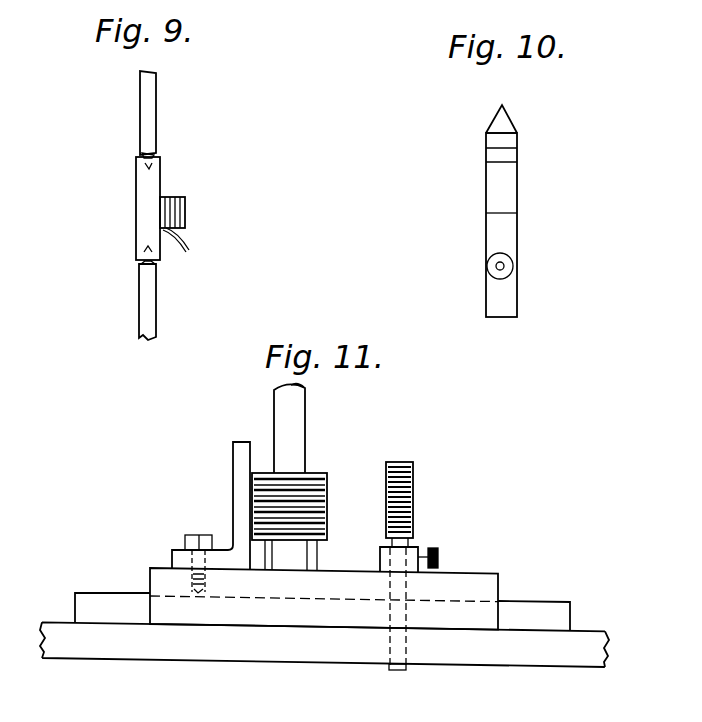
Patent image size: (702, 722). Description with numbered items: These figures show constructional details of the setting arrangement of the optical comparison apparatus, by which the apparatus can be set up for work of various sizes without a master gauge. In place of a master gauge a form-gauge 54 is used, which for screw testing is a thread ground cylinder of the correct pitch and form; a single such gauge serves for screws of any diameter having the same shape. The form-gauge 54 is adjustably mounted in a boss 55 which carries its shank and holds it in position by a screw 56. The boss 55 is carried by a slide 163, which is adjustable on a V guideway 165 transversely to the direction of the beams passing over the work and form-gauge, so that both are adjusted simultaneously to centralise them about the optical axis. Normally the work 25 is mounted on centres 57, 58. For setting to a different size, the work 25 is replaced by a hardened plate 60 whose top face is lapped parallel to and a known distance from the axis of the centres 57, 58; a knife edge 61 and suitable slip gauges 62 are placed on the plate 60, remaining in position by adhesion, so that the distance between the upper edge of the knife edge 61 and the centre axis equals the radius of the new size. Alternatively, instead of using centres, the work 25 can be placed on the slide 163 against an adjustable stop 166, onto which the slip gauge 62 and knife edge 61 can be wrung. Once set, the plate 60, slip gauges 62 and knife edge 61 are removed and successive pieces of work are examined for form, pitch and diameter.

In FIG. 9, the centre 57 is at (146, 108).
In FIG. 9, the centre 58 is at (146, 297).
In FIG. 9, the hardened plate 60 is at (146, 194).
In FIG. 10, the hardened plate 60 is at (512, 229).
In FIG. 9, the knife edge 61 is at (186, 204).
In FIG. 10, the knife edge 61 is at (511, 121).
In FIG. 9, the slip gauges 62 is at (190, 249).
In FIG. 10, the slip gauges 62 is at (512, 163).
In FIG. 11, the work 25 is at (325, 474).
In FIG. 11, the form-gauge 54 is at (412, 478).
In FIG. 11, the boss 55 is at (418, 546).
In FIG. 11, the screw 56 is at (440, 557).
In FIG. 11, the slide 163 is at (500, 578).
In FIG. 11, the V guideway 165 is at (553, 612).
In FIG. 11, the adjustable stop 166 is at (240, 470).